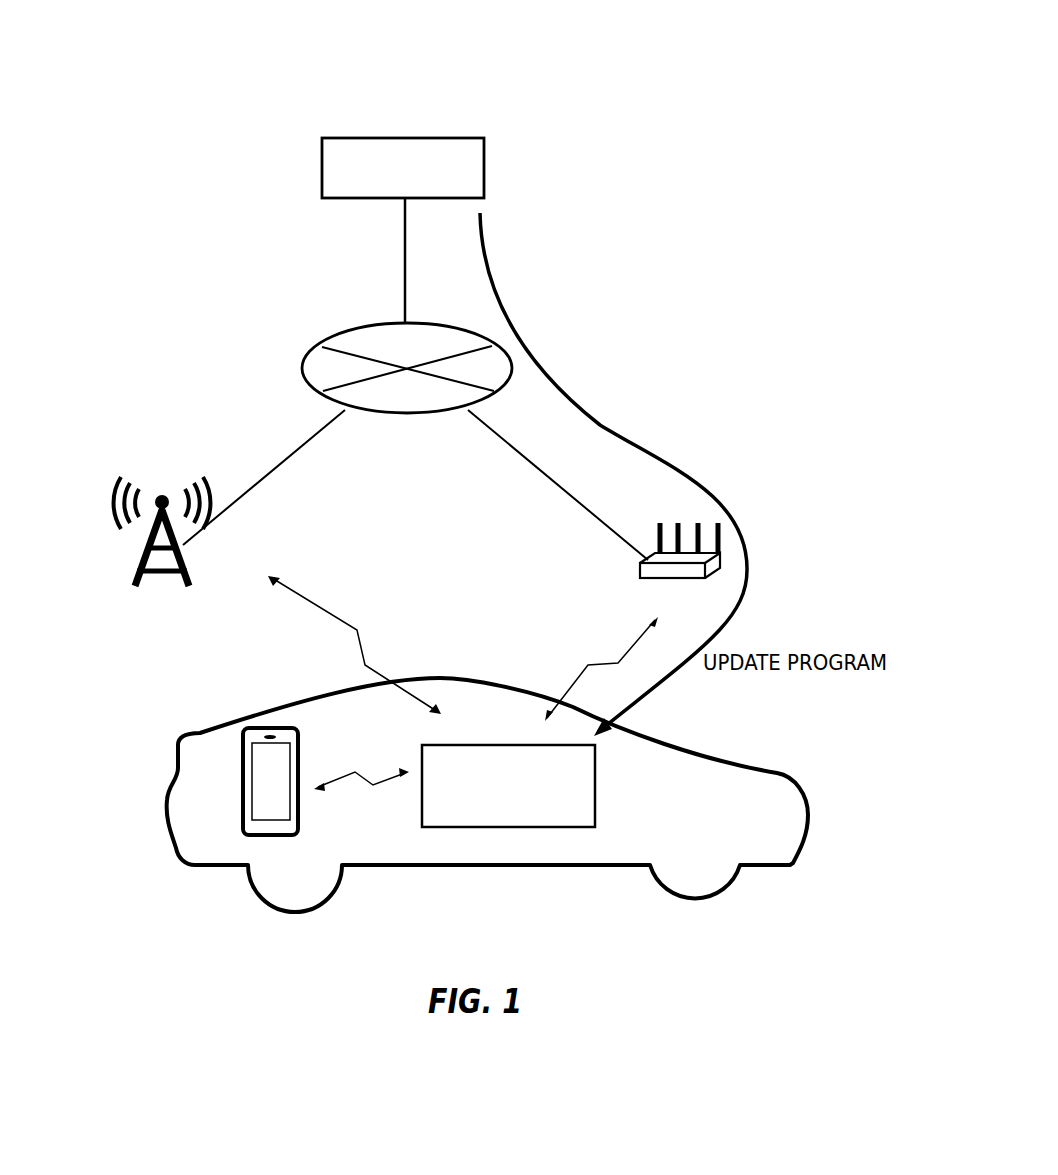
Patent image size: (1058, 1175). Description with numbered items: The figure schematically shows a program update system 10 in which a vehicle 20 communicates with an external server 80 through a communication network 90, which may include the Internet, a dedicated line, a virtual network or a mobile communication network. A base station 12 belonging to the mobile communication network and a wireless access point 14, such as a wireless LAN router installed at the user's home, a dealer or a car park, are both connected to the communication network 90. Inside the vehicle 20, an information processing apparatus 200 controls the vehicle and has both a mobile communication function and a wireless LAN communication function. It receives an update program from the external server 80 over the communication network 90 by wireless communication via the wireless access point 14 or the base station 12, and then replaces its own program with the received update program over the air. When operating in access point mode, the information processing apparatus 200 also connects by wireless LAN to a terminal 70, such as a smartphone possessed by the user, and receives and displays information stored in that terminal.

The program update system 10 is at (713, 79).
The external server 80 is at (437, 138).
The communication network 90 is at (413, 323).
The base station 12 is at (145, 551).
The wireless access point 14 is at (638, 568).
The information processing apparatus 200 is at (494, 745).
The terminal 70 is at (270, 727).
The vehicle 20 is at (704, 760).